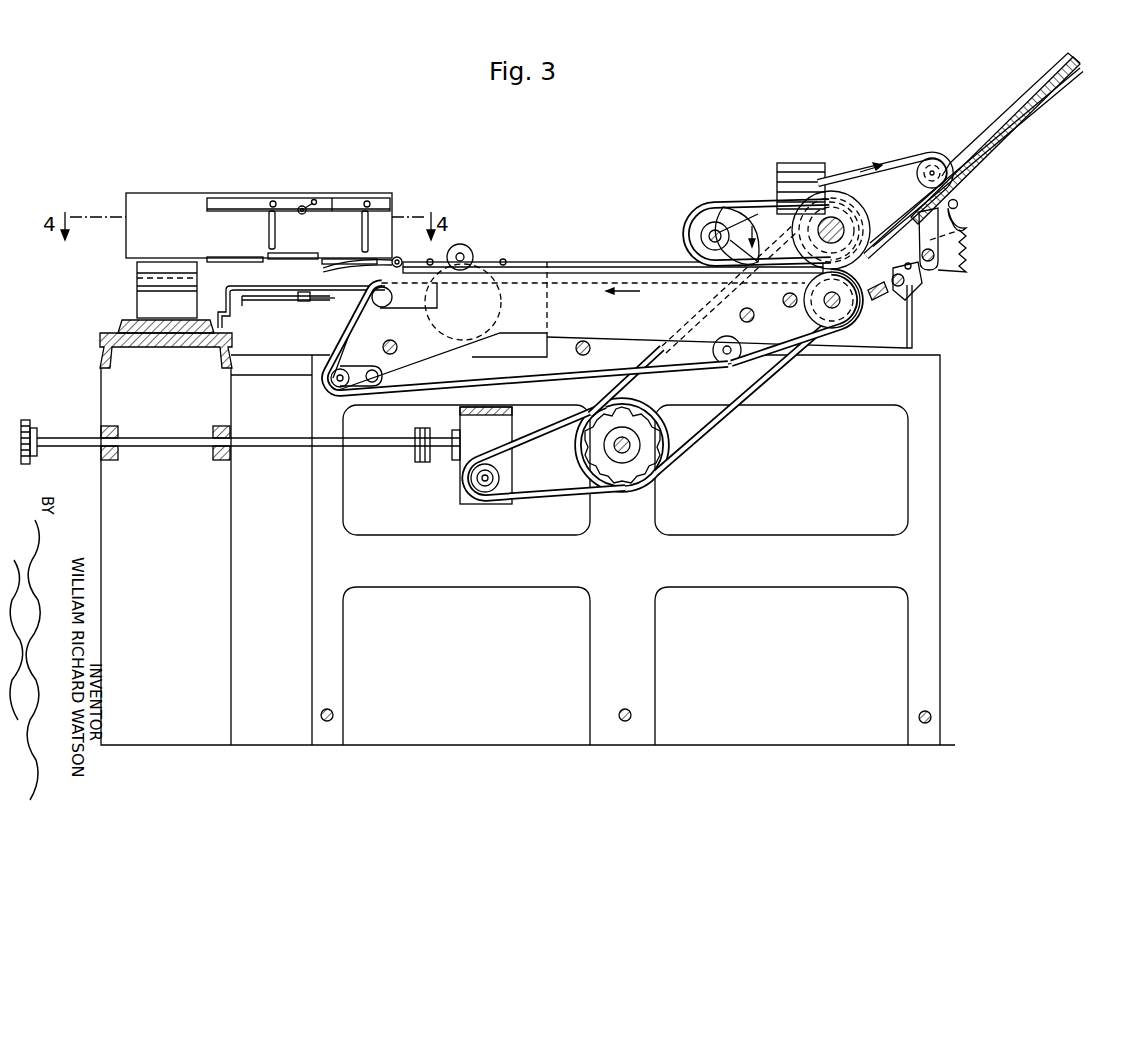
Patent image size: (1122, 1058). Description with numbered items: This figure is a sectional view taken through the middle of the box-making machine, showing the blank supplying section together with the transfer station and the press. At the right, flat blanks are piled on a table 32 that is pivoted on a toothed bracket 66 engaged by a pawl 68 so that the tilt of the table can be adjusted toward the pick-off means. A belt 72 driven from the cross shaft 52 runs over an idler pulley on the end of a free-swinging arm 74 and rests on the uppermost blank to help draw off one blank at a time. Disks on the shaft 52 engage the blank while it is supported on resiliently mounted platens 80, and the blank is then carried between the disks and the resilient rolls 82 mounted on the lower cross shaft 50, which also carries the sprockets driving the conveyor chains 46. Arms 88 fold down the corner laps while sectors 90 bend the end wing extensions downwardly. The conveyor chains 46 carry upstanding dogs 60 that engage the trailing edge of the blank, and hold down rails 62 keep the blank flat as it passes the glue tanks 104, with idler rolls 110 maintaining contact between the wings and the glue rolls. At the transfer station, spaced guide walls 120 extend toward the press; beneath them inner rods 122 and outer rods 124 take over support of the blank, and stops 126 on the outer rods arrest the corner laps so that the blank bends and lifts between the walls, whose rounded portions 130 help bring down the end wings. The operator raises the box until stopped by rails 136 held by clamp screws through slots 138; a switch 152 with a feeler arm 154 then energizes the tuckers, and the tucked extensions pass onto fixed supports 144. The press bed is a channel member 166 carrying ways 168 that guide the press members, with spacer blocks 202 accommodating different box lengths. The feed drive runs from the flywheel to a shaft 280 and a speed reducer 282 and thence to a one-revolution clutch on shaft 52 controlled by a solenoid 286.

The table 32 is at (993, 128).
The conveyor chains 46 is at (590, 378).
The cross shaft 50 is at (846, 303).
The cross shaft 52 is at (831, 217).
The dogs 60 is at (580, 275).
The hold down rails 62 is at (548, 262).
The bracket 66 is at (948, 268).
The pawl 68 is at (965, 215).
The belt 72 is at (898, 162).
The free-swinging arm 74 is at (896, 211).
The platens 80 is at (918, 300).
The resilient rolls 82 is at (845, 320).
The arms 88 is at (718, 222).
The sectors 90 is at (756, 210).
The glue tanks 104 is at (522, 352).
The idler rolls 110 is at (470, 250).
The guide walls 120 is at (165, 193).
The rods 122 is at (245, 288).
The rods 124 is at (275, 300).
The stops 126 is at (322, 302).
The rounded portions 130 is at (338, 266).
The rails 136 is at (245, 198).
The slots 138 is at (268, 226).
The fixed supports 144 is at (238, 262).
The switch 152 is at (316, 199).
The feeler arm 154 is at (305, 214).
The channel member 166 is at (100, 345).
The ways 168 is at (120, 325).
The spacer blocks 202 is at (137, 292).
The shaft 280 is at (150, 447).
The speed reducer 282 is at (447, 464).
The solenoid 286 is at (798, 163).